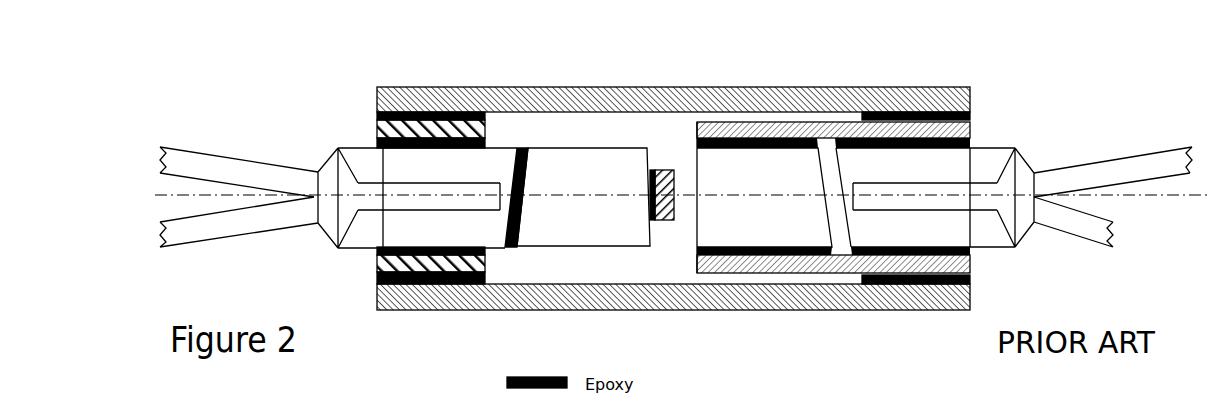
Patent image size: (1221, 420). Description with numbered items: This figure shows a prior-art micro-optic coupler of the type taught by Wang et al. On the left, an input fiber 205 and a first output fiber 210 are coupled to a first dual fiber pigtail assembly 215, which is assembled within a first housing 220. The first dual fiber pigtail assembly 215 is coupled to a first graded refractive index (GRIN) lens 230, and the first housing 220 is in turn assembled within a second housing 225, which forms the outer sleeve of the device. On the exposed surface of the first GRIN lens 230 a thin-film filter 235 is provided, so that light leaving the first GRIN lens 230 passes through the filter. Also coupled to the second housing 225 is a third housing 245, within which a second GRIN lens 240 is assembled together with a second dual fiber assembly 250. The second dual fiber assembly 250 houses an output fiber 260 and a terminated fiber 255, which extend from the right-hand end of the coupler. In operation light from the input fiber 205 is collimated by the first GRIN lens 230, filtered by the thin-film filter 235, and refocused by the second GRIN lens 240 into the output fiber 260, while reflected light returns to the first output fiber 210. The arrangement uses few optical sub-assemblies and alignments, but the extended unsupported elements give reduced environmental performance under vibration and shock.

The input fiber 205 is at (200, 172).
The first output fiber 210 is at (268, 212).
The first dual fiber pigtail assembly 215 is at (360, 155).
The first housing 220 is at (485, 128).
The second housing 225 is at (543, 87).
The first graded refractive index (GRIN) lens 230 is at (583, 168).
The thin-film filter 235 is at (667, 168).
The second GRIN lens 240 is at (737, 170).
The third housing 245 is at (795, 130).
The second dual fiber assembly 250 is at (982, 170).
The terminated fiber 255 is at (1075, 222).
The output fiber 260 is at (1142, 170).